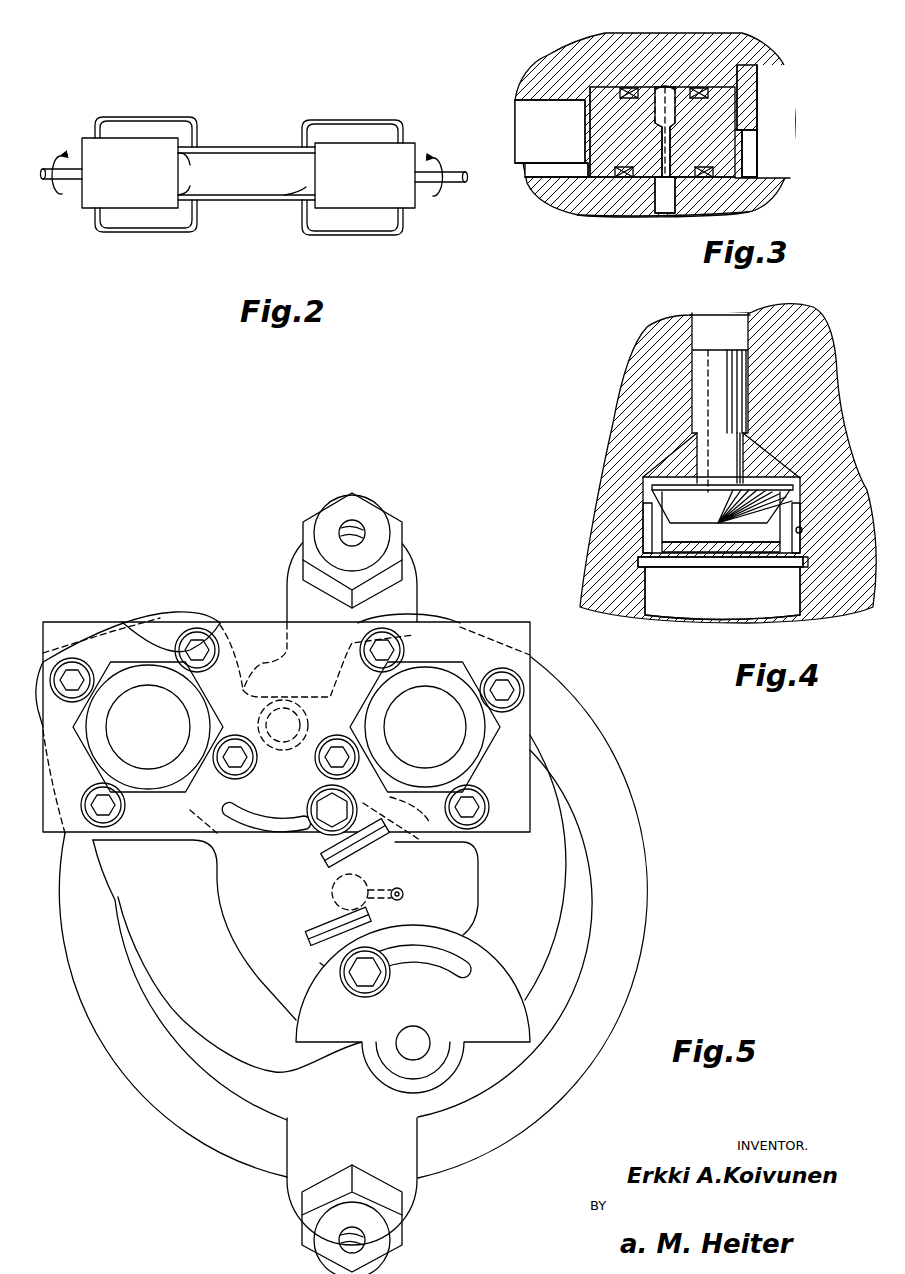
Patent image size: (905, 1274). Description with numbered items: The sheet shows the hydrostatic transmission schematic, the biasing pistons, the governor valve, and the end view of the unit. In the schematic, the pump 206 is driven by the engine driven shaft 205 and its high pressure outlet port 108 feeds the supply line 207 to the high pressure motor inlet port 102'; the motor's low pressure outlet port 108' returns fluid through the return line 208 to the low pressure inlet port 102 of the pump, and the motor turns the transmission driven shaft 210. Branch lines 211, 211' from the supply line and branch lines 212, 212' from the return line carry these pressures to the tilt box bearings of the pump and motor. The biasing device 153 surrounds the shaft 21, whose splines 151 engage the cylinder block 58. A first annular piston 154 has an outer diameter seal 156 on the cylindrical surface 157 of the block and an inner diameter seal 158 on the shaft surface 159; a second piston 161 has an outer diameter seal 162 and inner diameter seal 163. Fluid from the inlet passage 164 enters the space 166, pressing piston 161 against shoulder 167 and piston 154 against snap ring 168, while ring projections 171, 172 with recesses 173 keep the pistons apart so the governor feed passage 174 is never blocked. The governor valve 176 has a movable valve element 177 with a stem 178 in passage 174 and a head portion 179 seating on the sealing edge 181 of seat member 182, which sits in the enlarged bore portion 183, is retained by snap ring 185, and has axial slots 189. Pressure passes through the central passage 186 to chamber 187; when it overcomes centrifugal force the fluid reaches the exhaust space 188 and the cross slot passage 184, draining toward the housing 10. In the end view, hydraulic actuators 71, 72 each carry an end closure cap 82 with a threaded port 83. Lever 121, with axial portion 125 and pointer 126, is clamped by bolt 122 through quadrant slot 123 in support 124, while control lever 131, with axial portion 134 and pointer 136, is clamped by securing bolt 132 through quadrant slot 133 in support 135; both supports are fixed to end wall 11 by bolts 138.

In FIG. 5, the housing 10 is at (617, 792).
In FIG. 5, the end wall 11 is at (572, 720).
In FIG. 3, the shaft 21 is at (573, 200).
In FIG. 3, the cylinder block 58 is at (548, 85).
In FIG. 4, the cylinder block 58 is at (830, 448).
In FIG. 5, the hydraulic actuator 71 is at (280, 553).
In FIG. 5, the hydraulic actuator 72 is at (280, 1192).
In FIG. 5, the end closure cap 82 is at (393, 577).
In FIG. 5, the threaded port 83 is at (358, 530).
In FIG. 2, the low pressure inlet port 102 is at (202, 185).
In FIG. 2, the high pressure motor inlet port 102' is at (300, 166).
In FIG. 2, the high pressure outlet port 108 is at (203, 164).
In FIG. 2, the low pressure outlet port 108' is at (264, 206).
In FIG. 5, the lever 121 is at (322, 722).
In FIG. 5, the bolt 122 is at (327, 822).
In FIG. 5, the quadrant slot 123 is at (245, 818).
In FIG. 5, the support 124 is at (475, 633).
In FIG. 5, the axial portion 125 is at (369, 848).
In FIG. 5, the pointer 126 is at (326, 858).
In FIG. 5, the control lever 131 is at (382, 1050).
In FIG. 5, the securing bolt 132 is at (368, 968).
In FIG. 5, the quadrant slot 133 is at (452, 958).
In FIG. 5, the axial portion 134 is at (323, 940).
In FIG. 5, the support 135 is at (500, 978).
In FIG. 5, the pointer 136 is at (337, 947).
In FIG. 5, the bolts 138 is at (72, 677).
In FIG. 3, the splines 151 is at (523, 157).
In FIG. 3, the biasing device 153 is at (772, 153).
In FIG. 3, the first annular piston 154 is at (750, 132).
In FIG. 3, the outer diameter seal 156 is at (698, 88).
In FIG. 3, the cylindrical surface 157 is at (673, 85).
In FIG. 3, the inner diameter seal 158 is at (705, 167).
In FIG. 3, the outer diameter surface 159 is at (753, 178).
In FIG. 3, the second piston 161 is at (597, 138).
In FIG. 3, the outer diameter seal 162 is at (634, 88).
In FIG. 3, the inner diameter seal 163 is at (623, 178).
In FIG. 3, the inlet passage 164 is at (667, 200).
In FIG. 3, the space 166 is at (723, 122).
In FIG. 3, the shoulder 167 is at (587, 175).
In FIG. 3, the snap ring 168 is at (760, 77).
In FIG. 3, the annular ring projection 171 is at (672, 133).
In FIG. 3, the annular ring projection 172 is at (660, 106).
In FIG. 3, the recesses 173 is at (629, 145).
In FIG. 4, the governor feed passage 174 is at (748, 324).
In FIG. 4, the governor valve 176 is at (620, 463).
In FIG. 4, the movable valve element 177 is at (723, 462).
In FIG. 4, the stem 178 is at (727, 383).
In FIG. 4, the head portion 179 is at (790, 500).
In FIG. 4, the sealing edge 181 is at (645, 498).
In FIG. 4, the seat member 182 is at (720, 546).
In FIG. 4, the enlarged bore portion 183 is at (802, 530).
In FIG. 4, the cross slot passage 184 is at (675, 558).
In FIG. 4, the snap ring 185 is at (803, 560).
In FIG. 4, the central passage 186 is at (707, 388).
In FIG. 4, the chamber 187 is at (750, 535).
In FIG. 4, the exhaust space 188 is at (650, 482).
In FIG. 4, the axial slots 189 is at (648, 517).
In FIG. 2, the engine driven shaft 205 is at (66, 190).
In FIG. 2, the pump 206 is at (82, 162).
In FIG. 2, the supply line 207 is at (212, 148).
In FIG. 2, the return line 208 is at (228, 193).
In FIG. 2, the transmission driven shaft 210 is at (432, 196).
In FIG. 2, the branch line 211 is at (155, 117).
In FIG. 2, the branch line 211' is at (332, 133).
In FIG. 2, the branch line 212 is at (164, 227).
In FIG. 2, the branch line 212' is at (331, 217).